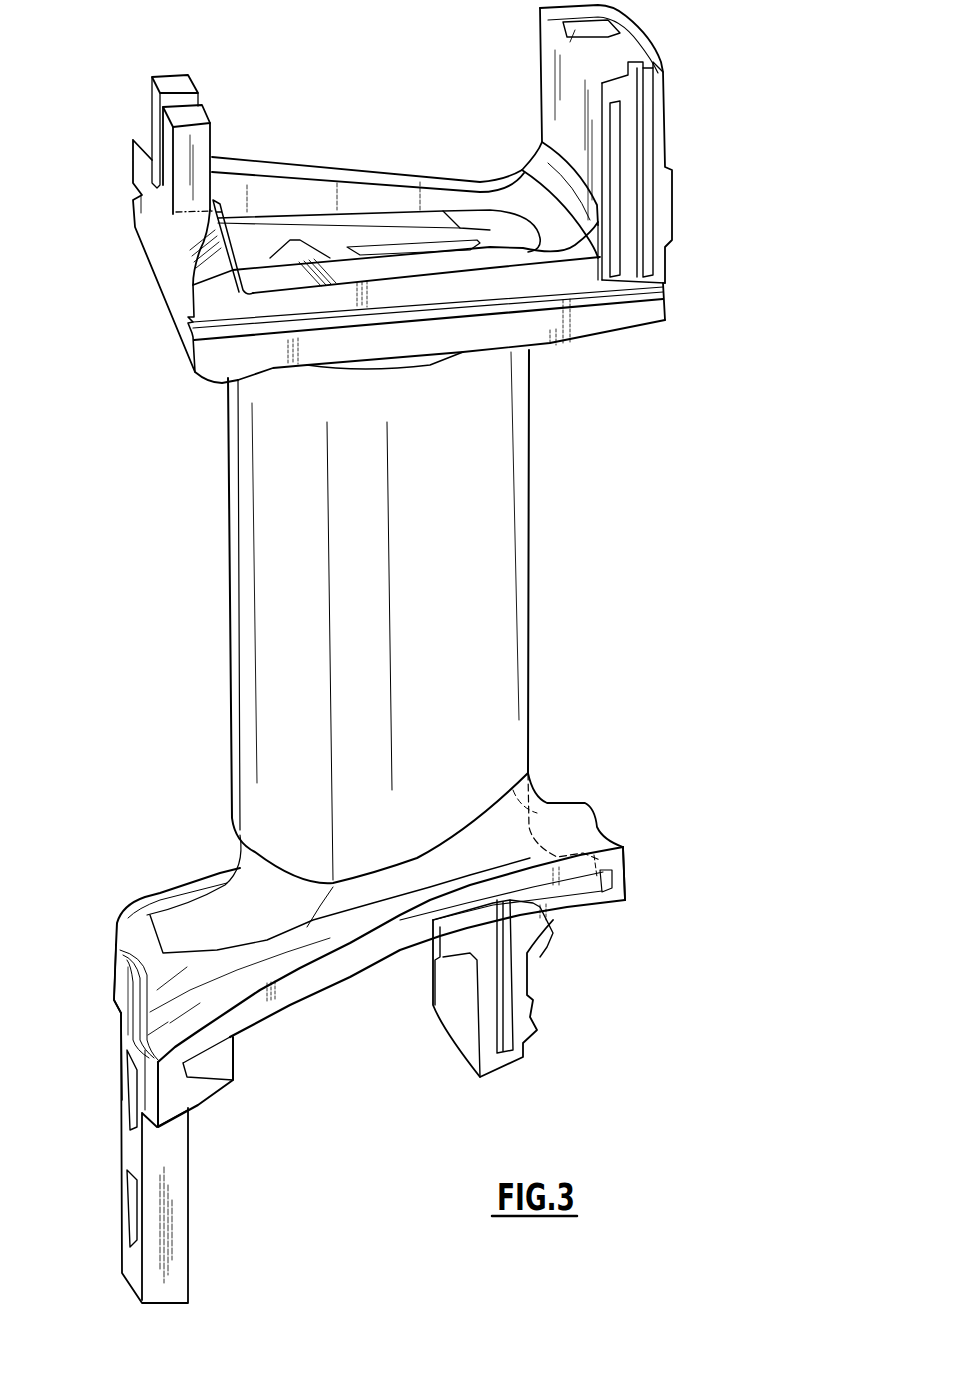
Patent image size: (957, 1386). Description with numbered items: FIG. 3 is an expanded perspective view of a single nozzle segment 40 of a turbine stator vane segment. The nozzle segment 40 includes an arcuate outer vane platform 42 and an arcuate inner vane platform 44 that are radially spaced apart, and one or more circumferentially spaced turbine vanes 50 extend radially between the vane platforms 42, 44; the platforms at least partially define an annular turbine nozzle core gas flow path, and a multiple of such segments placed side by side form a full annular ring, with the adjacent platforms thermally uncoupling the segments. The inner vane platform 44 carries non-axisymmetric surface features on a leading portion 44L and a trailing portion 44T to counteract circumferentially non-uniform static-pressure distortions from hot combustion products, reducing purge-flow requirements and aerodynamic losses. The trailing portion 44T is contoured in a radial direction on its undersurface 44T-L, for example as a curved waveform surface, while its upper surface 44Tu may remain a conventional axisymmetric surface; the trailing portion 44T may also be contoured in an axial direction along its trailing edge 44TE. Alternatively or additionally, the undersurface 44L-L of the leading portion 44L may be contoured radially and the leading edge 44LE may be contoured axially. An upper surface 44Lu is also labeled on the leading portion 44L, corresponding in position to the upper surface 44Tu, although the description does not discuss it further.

The nozzle segment 40 is at (748, 163).
The outer vane platform 42 is at (708, 288).
The inner vane platform 44 is at (698, 848).
The leading portion 44L is at (147, 875).
The leading platform upper surface 44Lu is at (150, 913).
The leading edge 44LE is at (121, 1013).
The undersurface of the leading portion 44L-L is at (168, 1125).
The trailing portion 44T is at (598, 766).
The upper surface of the trailing portion 44Tu is at (593, 830).
The trailing edge 44TE is at (633, 868).
The undersurface of the trailing portion 44T-L is at (575, 894).
The turbine vane 50 is at (493, 602).